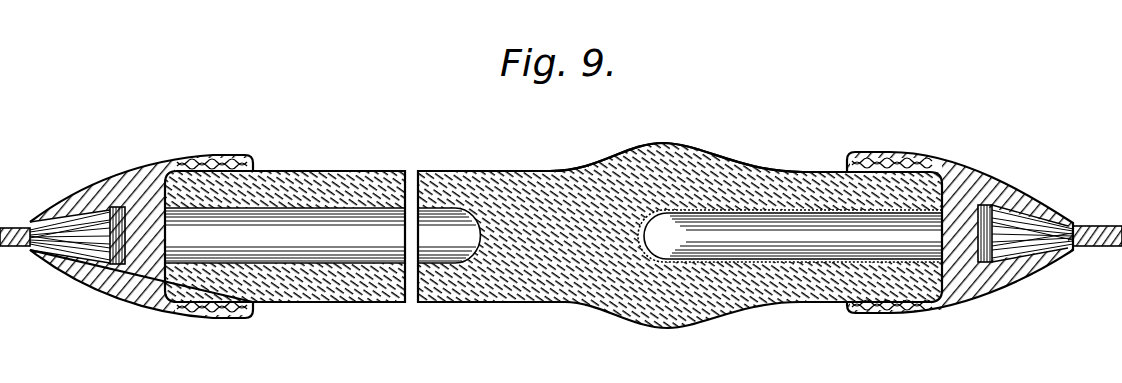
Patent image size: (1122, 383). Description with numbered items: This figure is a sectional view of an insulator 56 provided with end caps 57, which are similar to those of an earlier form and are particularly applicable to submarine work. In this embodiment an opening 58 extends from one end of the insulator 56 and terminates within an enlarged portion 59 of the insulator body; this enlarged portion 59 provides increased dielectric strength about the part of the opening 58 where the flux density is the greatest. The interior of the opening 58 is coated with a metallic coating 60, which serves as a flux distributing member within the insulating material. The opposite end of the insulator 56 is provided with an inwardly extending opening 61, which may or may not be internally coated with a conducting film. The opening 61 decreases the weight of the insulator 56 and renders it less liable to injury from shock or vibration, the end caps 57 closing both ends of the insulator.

The insulator 56 is at (545, 172).
The end caps 57 is at (139, 186).
The opening 58 is at (818, 226).
The enlarged portion 59 is at (680, 157).
The metallic coating 60 is at (769, 210).
The inwardly extending opening 61 is at (365, 247).